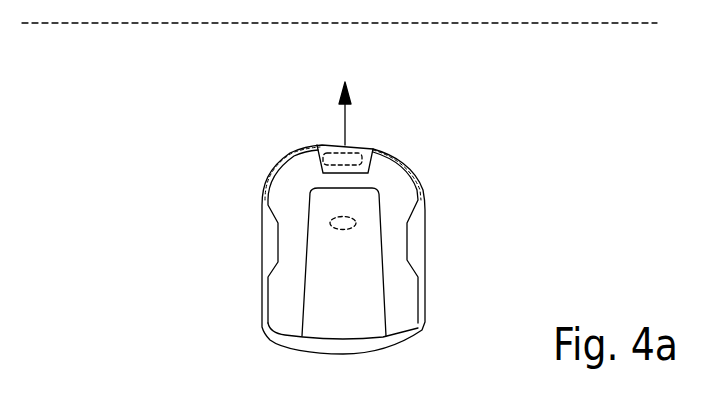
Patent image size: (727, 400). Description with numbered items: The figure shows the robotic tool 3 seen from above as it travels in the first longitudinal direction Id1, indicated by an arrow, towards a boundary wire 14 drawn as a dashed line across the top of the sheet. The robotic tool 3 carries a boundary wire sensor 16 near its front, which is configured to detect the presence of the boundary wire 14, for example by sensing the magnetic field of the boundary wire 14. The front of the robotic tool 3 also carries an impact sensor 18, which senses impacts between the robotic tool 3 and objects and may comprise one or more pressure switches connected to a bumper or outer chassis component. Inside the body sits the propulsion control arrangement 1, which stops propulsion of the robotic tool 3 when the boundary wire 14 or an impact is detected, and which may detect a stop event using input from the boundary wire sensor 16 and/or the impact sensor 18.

The robotic tool 3 is at (210, 157).
The impact sensor 18 is at (320, 148).
The boundary wire sensor 16 is at (357, 159).
The propulsion control arrangement 1 is at (343, 221).
The boundary wire 14 is at (615, 24).
The first longitudinal direction Id1 is at (345, 113).